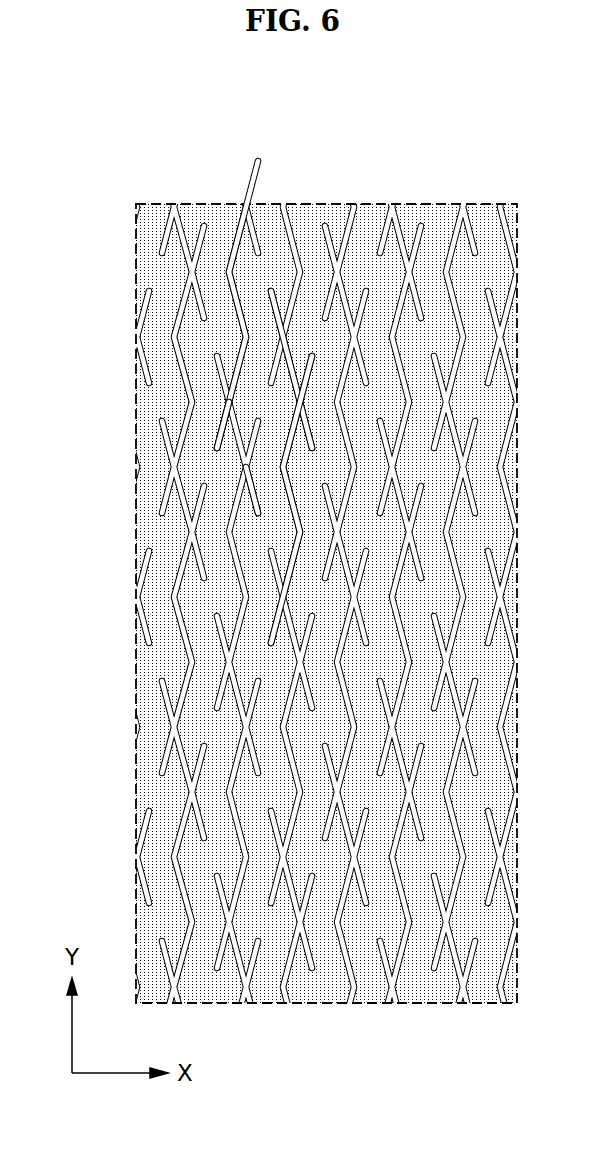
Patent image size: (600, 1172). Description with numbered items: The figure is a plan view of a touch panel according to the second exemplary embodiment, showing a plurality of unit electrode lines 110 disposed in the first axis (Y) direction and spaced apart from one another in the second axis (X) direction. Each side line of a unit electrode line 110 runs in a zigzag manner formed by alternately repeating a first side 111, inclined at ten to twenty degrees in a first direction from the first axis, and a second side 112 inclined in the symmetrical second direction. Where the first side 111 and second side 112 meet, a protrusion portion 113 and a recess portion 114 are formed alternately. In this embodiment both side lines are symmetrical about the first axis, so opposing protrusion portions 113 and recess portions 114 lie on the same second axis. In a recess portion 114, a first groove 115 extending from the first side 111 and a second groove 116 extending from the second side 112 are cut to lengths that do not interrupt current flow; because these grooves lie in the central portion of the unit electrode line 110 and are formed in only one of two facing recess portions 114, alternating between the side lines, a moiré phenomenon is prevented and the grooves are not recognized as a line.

The unit electrode line 110 is at (262, 222).
The first side 111 is at (293, 372).
The second side 112 is at (289, 437).
The protrusion portion 113 is at (229, 401).
The recess portion 114 is at (247, 335).
The first groove 115 is at (253, 498).
The second groove 116 is at (224, 441).